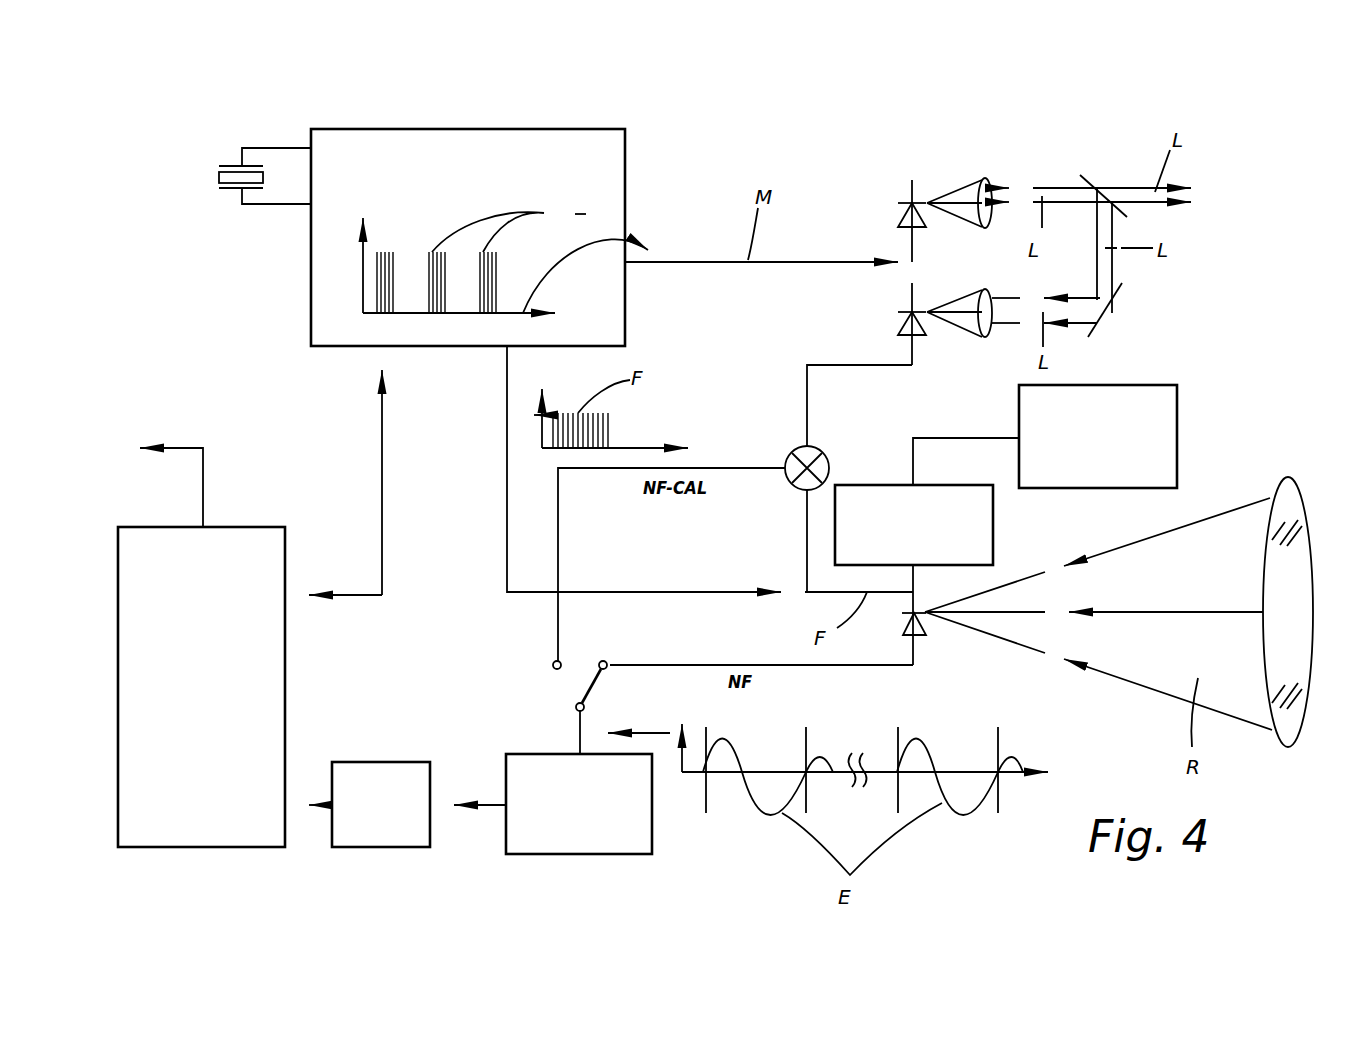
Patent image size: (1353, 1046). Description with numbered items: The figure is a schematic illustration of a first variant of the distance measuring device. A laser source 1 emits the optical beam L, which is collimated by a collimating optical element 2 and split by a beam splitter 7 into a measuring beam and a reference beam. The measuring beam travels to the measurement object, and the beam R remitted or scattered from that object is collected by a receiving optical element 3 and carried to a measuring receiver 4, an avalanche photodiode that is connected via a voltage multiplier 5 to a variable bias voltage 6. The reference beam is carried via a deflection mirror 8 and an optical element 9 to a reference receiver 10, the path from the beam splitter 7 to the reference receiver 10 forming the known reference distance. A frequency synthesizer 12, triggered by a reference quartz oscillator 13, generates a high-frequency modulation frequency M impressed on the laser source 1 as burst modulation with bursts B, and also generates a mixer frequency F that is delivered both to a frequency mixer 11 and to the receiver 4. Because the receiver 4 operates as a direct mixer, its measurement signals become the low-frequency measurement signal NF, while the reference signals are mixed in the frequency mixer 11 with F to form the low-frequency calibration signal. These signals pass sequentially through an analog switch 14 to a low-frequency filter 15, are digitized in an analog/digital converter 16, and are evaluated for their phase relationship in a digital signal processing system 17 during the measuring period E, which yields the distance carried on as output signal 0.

The laser source 1 is at (925, 212).
The collimating optical element 2 is at (983, 180).
The receiving optical element 3 is at (1287, 490).
The measuring receiver 4 is at (920, 615).
The voltage multiplier 5 is at (993, 525).
The variable bias voltage 6 is at (1177, 430).
The beam splitter 7 is at (1092, 175).
The deflection mirror 8 is at (1107, 310).
The optical element 9 is at (985, 340).
The reference receiver 10 is at (928, 313).
The frequency mixer 11 is at (820, 450).
The frequency synthesizer 12 is at (468, 129).
The reference quartz oscillator 13 is at (222, 166).
The analog switch 14 is at (587, 683).
The low-frequency filter 15 is at (579, 854).
The analog/digital converter 16 is at (378, 762).
The digital signal processing system 17 is at (197, 847).
The output 0 is at (203, 484).